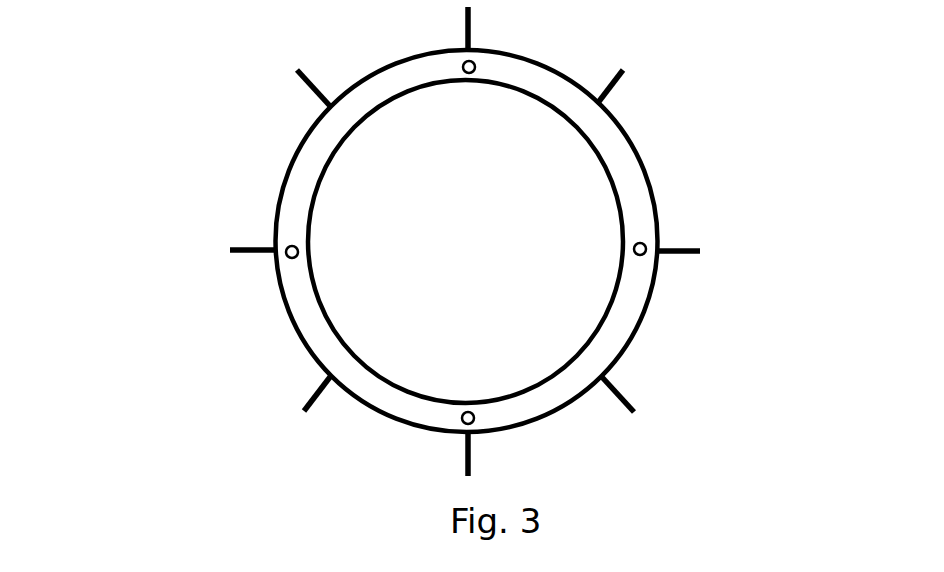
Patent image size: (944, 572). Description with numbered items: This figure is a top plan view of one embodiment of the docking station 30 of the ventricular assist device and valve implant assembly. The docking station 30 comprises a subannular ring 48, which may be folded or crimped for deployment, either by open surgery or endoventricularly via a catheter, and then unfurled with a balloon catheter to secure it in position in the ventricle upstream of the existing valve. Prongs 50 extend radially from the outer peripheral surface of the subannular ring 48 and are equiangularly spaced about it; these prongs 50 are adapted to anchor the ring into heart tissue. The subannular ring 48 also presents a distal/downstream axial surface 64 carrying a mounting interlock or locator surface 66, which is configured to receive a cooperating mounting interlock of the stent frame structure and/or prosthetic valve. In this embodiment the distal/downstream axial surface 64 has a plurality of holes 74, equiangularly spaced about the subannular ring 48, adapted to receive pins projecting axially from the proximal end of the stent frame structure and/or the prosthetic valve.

The docking station 30 is at (348, 241).
The subannular ring 48 is at (222, 171).
The prongs 50 is at (633, 412).
The distal/downstream axial surface 64 is at (572, 241).
The mounting interlock or locator surface 66 is at (605, 347).
The holes 74 is at (475, 70).